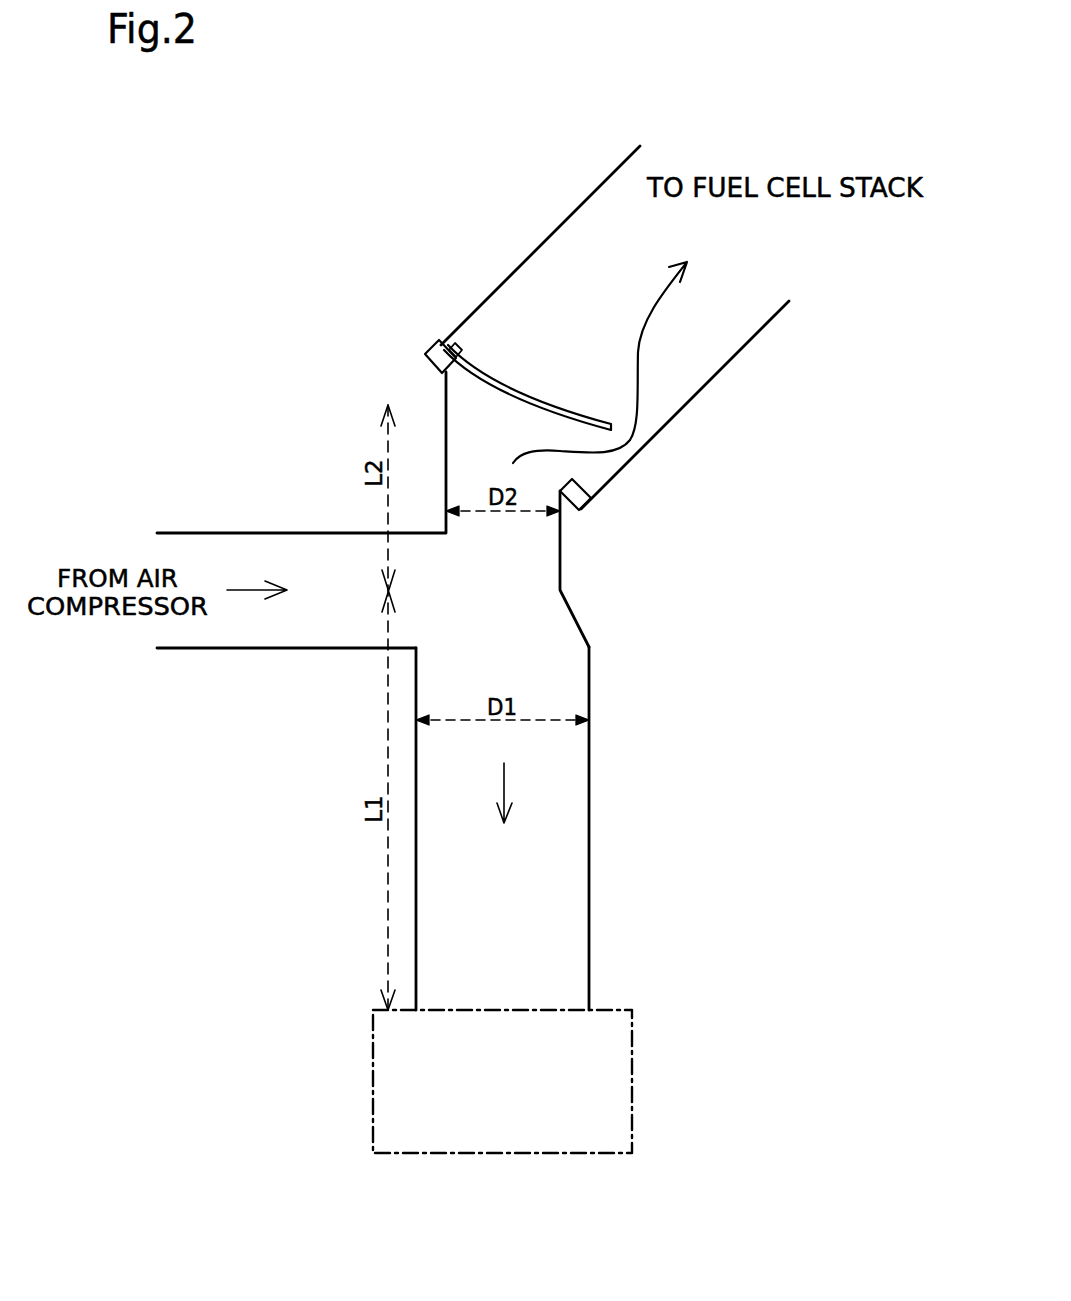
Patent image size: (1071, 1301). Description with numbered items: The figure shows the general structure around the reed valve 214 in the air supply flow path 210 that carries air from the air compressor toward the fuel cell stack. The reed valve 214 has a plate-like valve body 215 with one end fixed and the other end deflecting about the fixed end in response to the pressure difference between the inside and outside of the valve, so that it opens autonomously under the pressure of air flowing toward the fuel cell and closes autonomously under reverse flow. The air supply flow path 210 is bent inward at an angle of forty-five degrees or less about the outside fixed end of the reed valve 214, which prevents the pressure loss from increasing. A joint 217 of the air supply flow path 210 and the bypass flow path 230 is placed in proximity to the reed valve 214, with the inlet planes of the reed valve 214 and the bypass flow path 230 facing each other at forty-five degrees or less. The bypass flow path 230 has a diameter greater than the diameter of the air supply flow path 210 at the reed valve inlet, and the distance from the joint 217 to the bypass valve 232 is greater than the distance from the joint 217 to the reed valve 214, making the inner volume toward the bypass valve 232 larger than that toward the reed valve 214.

The air supply flow path 210 is at (618, 217).
The reed valve 214 is at (565, 369).
The valve body 215 is at (497, 383).
The joint 217 is at (502, 591).
The bypass flow path 230 is at (562, 883).
The bypass valve 232 is at (633, 1082).